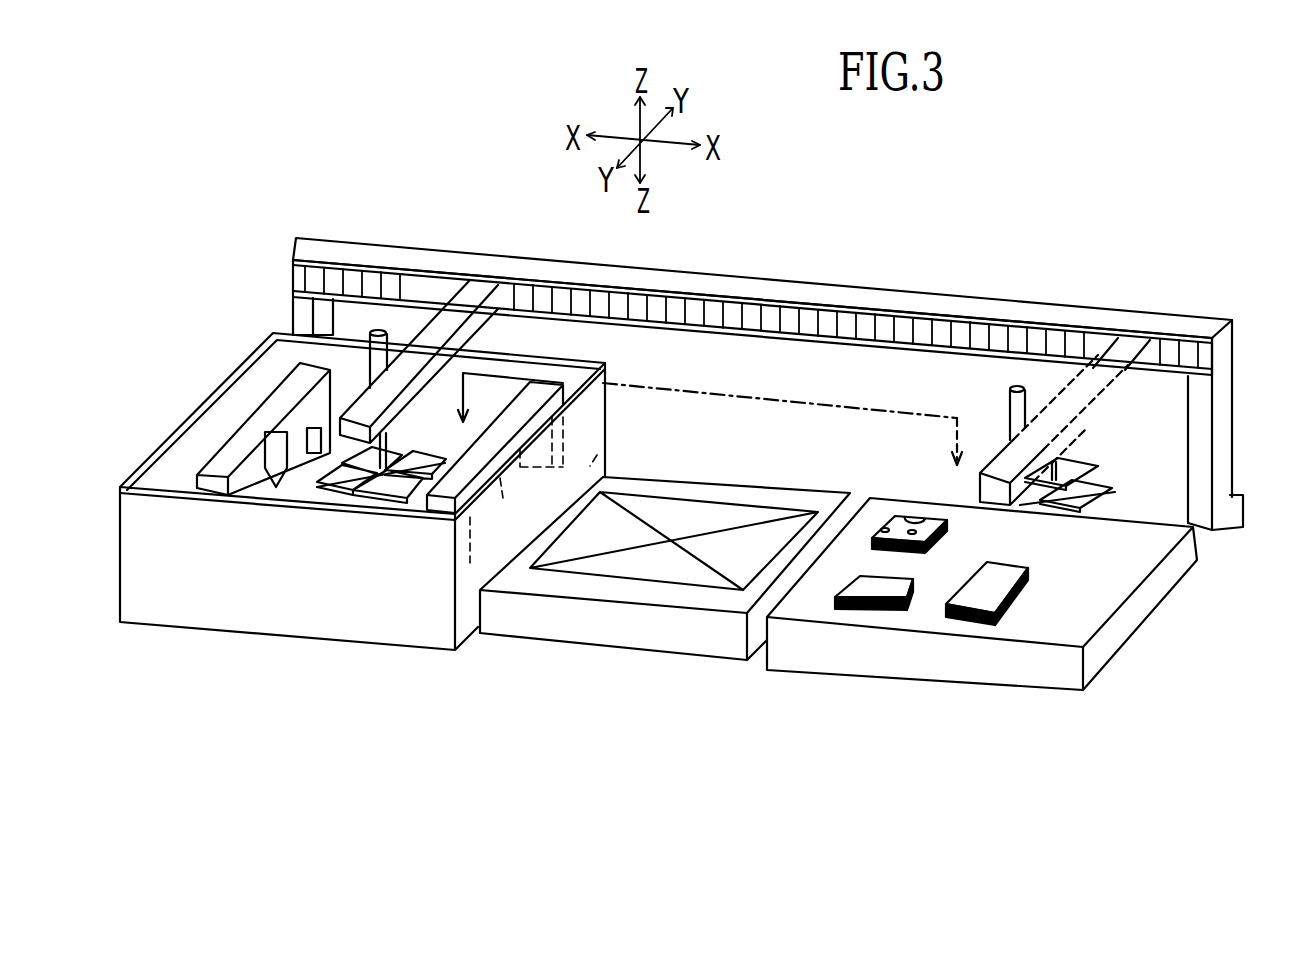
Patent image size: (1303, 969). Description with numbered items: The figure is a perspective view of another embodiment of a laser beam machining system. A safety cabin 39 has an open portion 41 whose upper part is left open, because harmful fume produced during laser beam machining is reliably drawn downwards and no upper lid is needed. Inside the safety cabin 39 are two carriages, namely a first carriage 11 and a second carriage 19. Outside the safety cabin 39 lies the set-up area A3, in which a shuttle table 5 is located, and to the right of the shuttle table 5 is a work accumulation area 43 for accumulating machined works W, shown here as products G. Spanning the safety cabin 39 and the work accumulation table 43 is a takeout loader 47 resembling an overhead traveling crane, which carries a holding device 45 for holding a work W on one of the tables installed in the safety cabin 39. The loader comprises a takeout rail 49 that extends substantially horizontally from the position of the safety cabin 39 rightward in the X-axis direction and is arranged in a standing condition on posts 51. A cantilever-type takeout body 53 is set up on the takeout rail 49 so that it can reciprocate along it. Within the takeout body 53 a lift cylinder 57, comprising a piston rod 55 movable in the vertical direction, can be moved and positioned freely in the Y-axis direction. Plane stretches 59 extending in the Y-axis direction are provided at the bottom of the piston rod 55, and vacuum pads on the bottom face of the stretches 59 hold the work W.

The shuttle table 5 is at (685, 603).
The first carriage 11 is at (220, 455).
The second carriage 19 is at (470, 477).
The safety cabin 39 is at (236, 370).
The open portion 41 is at (220, 412).
The work accumulation area 43 is at (945, 663).
The holding device 45 is at (370, 507).
The takeout loader 47 is at (968, 296).
The takeout rail 49 is at (812, 294).
The support post 51 is at (300, 310).
The takeout body 53 is at (480, 326).
The piston rod 55 is at (386, 442).
The lift cylinder 57 is at (376, 331).
The plane stretches 59 is at (357, 462).
The work W is at (710, 506).
The product G is at (873, 547).
The set-up area A3 is at (607, 669).